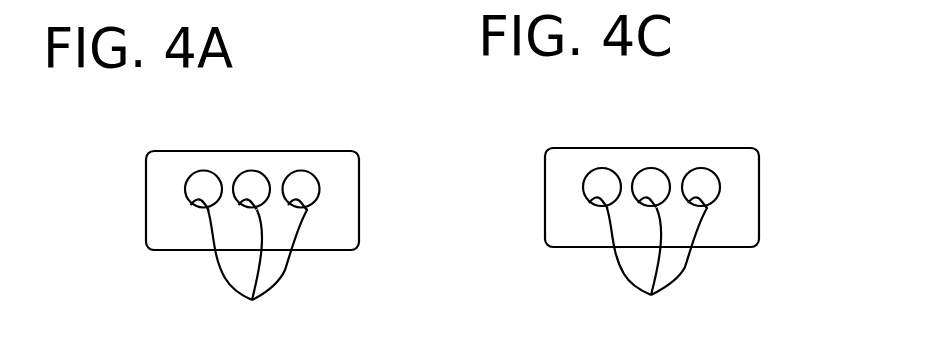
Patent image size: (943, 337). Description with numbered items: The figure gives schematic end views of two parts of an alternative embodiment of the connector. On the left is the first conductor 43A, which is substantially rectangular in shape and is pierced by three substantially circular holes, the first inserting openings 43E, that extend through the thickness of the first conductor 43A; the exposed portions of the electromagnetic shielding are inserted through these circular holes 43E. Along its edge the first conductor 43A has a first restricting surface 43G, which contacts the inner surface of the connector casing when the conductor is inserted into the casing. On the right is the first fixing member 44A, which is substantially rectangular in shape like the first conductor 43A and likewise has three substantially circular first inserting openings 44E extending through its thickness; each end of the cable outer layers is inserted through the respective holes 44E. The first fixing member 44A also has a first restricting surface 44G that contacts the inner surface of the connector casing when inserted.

In FIG. 4A, the first conductor 43A is at (359, 197).
In FIG. 4A, the first restricting surface 43G is at (248, 150).
In FIG. 4A, the first inserting openings 43E is at (249, 268).
In FIG. 4C, the first fixing member 44A is at (697, 197).
In FIG. 4C, the first restricting surface 44G is at (651, 146).
In FIG. 4C, the first inserting openings 44E is at (648, 266).